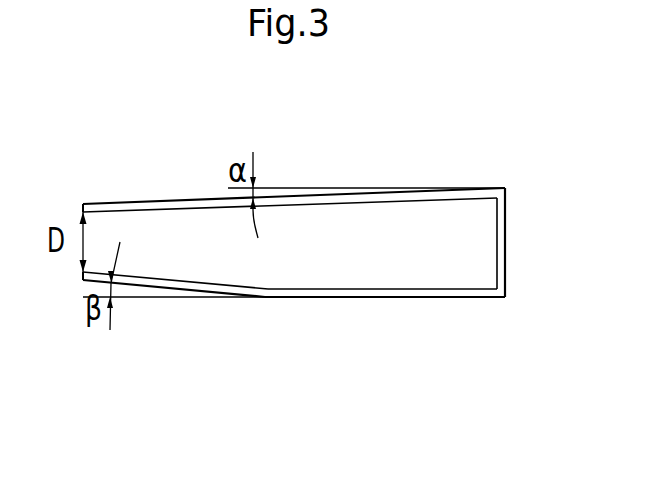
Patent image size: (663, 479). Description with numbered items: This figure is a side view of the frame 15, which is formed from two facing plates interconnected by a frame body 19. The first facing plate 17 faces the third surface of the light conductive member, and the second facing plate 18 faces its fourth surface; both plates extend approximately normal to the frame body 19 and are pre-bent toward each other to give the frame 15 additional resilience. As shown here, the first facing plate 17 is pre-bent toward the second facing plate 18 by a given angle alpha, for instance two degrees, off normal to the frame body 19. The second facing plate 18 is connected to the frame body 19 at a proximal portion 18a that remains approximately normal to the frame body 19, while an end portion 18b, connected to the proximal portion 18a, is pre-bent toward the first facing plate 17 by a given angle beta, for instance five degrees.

The frame 15 is at (338, 262).
The first facing plate 17 is at (138, 199).
The second facing plate 18 is at (294, 351).
The proximal portion 18a is at (385, 330).
The end portion 18b is at (180, 285).
The frame body 19 is at (507, 242).